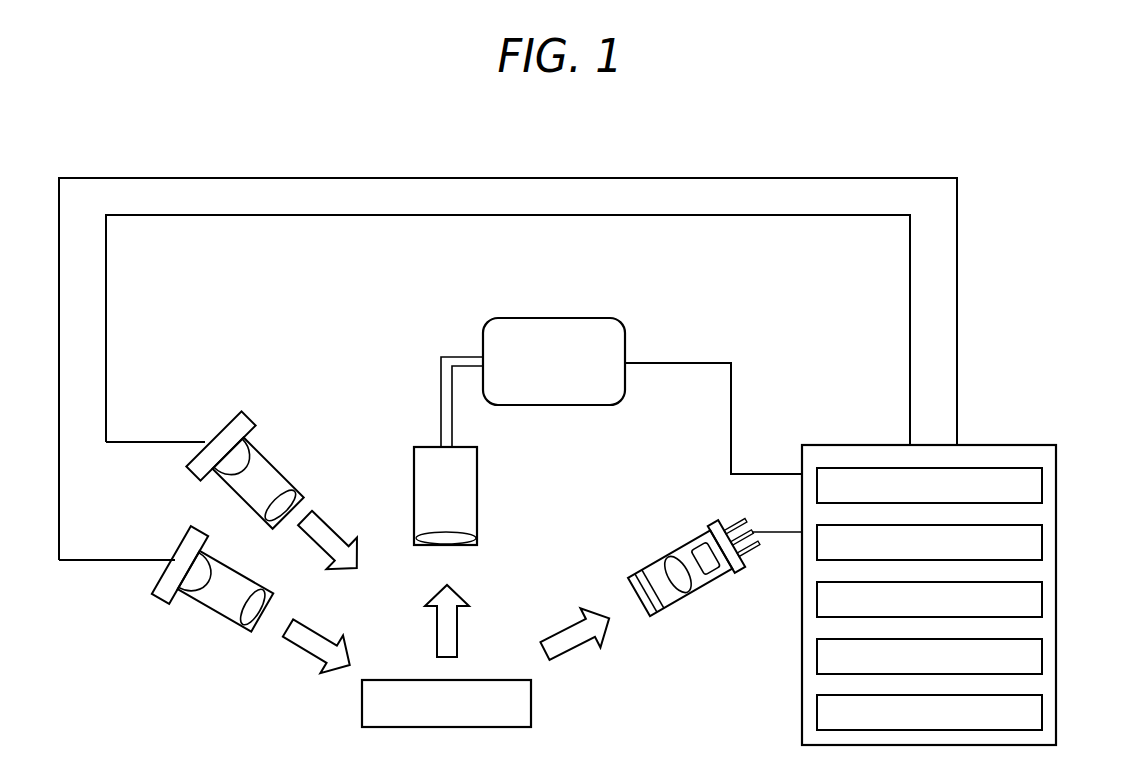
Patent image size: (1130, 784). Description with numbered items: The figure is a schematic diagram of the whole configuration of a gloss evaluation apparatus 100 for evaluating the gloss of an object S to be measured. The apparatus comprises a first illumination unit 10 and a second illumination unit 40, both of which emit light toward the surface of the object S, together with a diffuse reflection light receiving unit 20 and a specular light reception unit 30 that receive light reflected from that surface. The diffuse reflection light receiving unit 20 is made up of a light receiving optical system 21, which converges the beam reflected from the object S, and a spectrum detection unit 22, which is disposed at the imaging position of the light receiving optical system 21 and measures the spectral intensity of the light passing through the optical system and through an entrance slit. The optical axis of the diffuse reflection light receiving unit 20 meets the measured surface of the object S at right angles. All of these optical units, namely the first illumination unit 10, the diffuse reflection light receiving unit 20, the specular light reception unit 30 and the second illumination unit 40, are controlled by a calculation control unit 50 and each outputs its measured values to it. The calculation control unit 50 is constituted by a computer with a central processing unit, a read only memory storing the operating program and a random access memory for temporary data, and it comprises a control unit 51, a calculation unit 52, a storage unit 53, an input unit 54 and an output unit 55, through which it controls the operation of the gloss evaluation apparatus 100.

The gloss evaluation apparatus 100 is at (608, 137).
The first illumination unit 10 is at (181, 525).
The second illumination unit 40 is at (224, 418).
The diffuse reflection light receiving unit 20 is at (608, 394).
The light receiving optical system 21 is at (478, 470).
The spectrum detection unit 22 is at (576, 318).
The specular light reception unit 30 is at (708, 602).
The object to be measured S is at (540, 703).
The calculation control unit 50 is at (1023, 445).
The control unit 51 is at (1042, 485).
The calculation unit 52 is at (1042, 542).
The storage unit 53 is at (1042, 599).
The input unit 54 is at (1042, 656).
The output unit 55 is at (1042, 712).